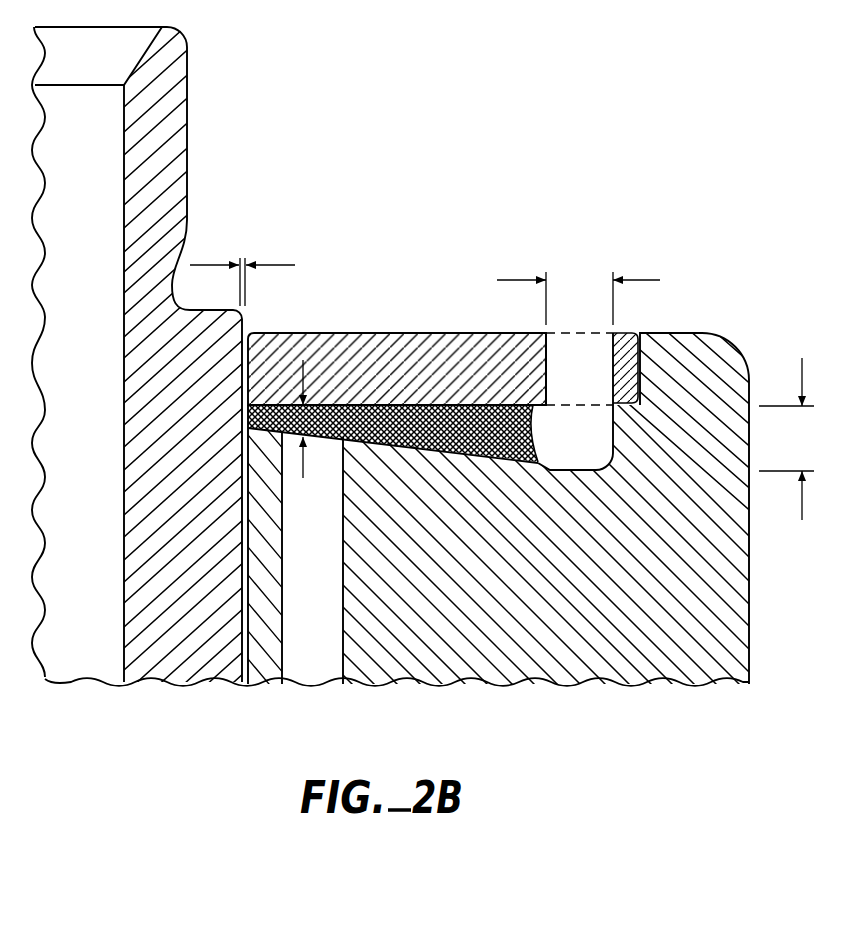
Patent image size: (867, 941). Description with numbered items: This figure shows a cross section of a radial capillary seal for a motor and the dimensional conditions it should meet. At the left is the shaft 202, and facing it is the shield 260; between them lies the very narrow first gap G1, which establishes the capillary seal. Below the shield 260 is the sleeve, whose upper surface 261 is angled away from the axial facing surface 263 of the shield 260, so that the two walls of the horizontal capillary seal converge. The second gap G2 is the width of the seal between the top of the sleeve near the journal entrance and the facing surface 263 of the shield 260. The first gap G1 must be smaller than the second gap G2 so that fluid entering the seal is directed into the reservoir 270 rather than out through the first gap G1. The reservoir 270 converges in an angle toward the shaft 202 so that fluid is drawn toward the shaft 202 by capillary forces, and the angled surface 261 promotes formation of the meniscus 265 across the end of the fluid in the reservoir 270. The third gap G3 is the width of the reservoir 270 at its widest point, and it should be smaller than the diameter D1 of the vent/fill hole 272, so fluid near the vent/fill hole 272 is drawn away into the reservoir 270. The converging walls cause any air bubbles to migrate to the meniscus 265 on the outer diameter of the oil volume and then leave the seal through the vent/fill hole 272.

The shaft 202 is at (103, 369).
The shield 260 is at (380, 348).
The surface 261 is at (443, 443).
The facing surface of the shield 263 is at (480, 403).
The meniscus 265 is at (527, 442).
The reservoir 270 is at (508, 403).
The vent/fill hole 272 is at (593, 360).
The first gap G1 is at (242, 275).
The second gap G2 is at (320, 419).
The third gap G3 is at (796, 439).
The diameter of the vent/fill hole D1 is at (578, 292).